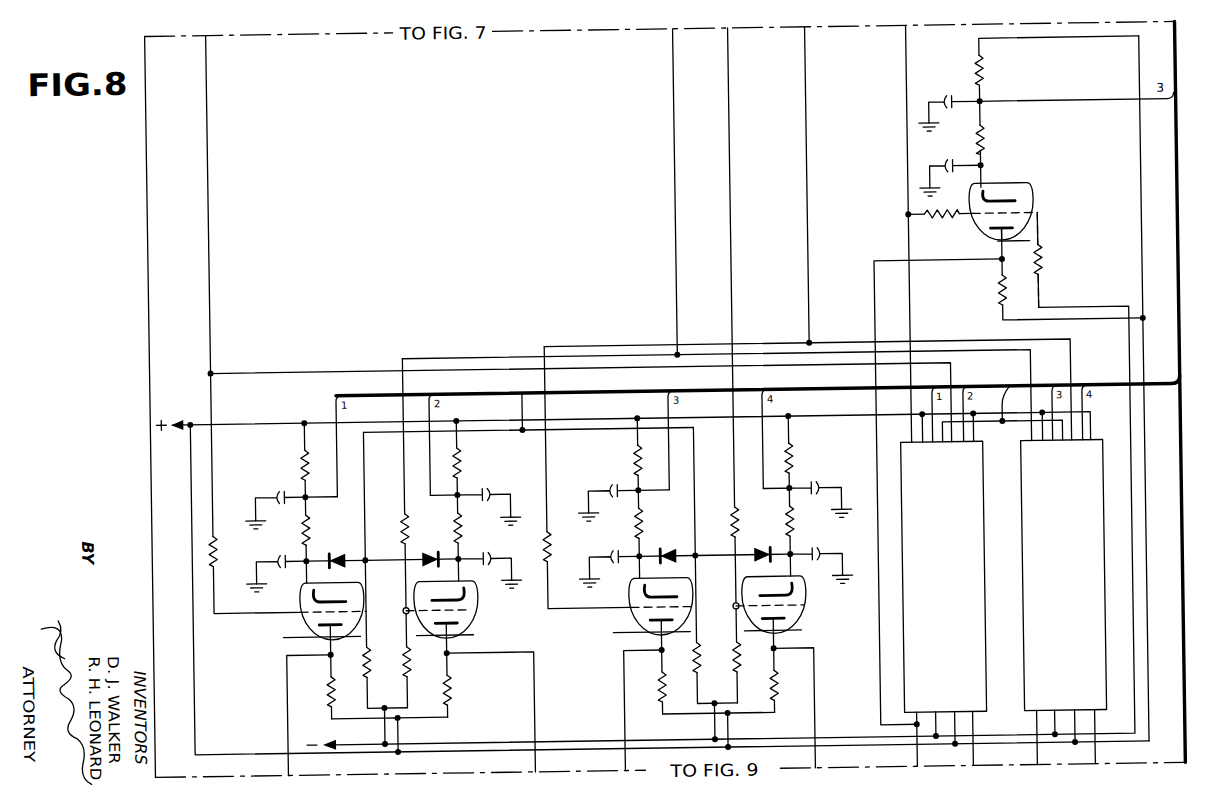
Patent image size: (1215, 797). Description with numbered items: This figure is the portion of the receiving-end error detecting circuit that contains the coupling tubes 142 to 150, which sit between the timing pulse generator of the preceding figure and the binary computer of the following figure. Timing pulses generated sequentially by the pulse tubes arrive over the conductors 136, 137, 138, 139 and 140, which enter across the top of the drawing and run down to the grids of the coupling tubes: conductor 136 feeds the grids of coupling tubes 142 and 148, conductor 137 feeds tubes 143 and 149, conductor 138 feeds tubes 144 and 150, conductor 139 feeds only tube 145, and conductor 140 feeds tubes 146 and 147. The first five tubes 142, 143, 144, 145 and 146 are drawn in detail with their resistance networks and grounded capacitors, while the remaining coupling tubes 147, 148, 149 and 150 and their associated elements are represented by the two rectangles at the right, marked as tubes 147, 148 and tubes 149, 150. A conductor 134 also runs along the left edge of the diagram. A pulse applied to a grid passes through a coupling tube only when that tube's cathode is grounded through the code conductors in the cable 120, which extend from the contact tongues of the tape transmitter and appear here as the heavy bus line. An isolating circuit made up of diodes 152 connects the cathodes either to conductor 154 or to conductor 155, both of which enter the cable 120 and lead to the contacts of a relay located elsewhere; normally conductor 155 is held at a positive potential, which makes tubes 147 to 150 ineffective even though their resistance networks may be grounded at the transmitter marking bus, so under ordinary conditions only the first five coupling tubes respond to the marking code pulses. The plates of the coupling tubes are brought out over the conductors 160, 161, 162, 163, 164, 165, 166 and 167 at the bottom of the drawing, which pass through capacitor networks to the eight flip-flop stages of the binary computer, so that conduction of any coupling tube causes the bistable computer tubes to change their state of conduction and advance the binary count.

The cable 120 is at (1178, 61).
The input conductor 134 is at (150, 56).
The conductor 136 is at (211, 66).
The conductor 137 is at (678, 55).
The conductor 138 is at (810, 52).
The conductor 139 is at (733, 65).
The conductor 140 is at (911, 62).
The coupling tube 142 is at (300, 627).
The coupling tube 143 is at (470, 626).
The coupling tube 144 is at (636, 625).
The coupling tube 145 is at (796, 626).
The coupling tube 146 is at (984, 236).
The coupling tube 147 is at (944, 576).
The coupling tube 148 is at (944, 576).
The coupling tube 149 is at (1064, 575).
The coupling tube 150 is at (1064, 575).
The diodes 152 is at (349, 538).
The conductor 154 is at (522, 406).
The conductor 155 is at (1013, 372).
The conductor 160 is at (282, 728).
The conductor 161 is at (524, 728).
The conductor 162 is at (615, 728).
The conductor 163 is at (810, 731).
The conductor 164 is at (914, 761).
The conductor 165 is at (972, 761).
The conductor 166 is at (1034, 761).
The conductor 167 is at (1092, 761).